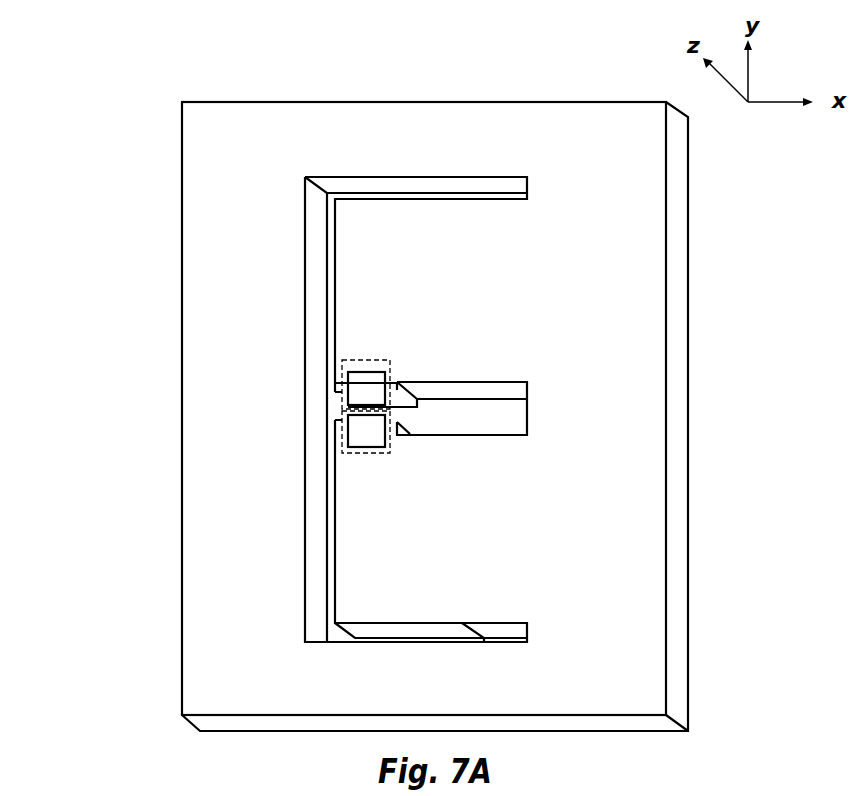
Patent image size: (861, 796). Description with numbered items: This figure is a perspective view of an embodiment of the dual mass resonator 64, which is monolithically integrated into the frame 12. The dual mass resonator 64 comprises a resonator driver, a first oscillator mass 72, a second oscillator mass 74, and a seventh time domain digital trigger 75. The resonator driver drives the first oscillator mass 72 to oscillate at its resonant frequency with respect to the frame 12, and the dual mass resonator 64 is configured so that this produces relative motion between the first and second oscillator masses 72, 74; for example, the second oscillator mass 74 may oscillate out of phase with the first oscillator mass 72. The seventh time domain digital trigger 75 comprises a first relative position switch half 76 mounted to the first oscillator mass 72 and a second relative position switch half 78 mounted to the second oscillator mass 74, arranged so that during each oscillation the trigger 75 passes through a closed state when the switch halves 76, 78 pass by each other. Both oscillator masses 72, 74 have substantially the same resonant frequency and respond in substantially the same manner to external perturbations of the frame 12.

The dual mass resonator 64 is at (98, 51).
The frame 12 is at (182, 371).
The first oscillator mass 72 is at (433, 294).
The second oscillator mass 74 is at (460, 540).
The seventh time domain digital trigger 75 is at (342, 410).
The first relative position switch half 76 is at (361, 372).
The second relative position switch half 78 is at (357, 447).